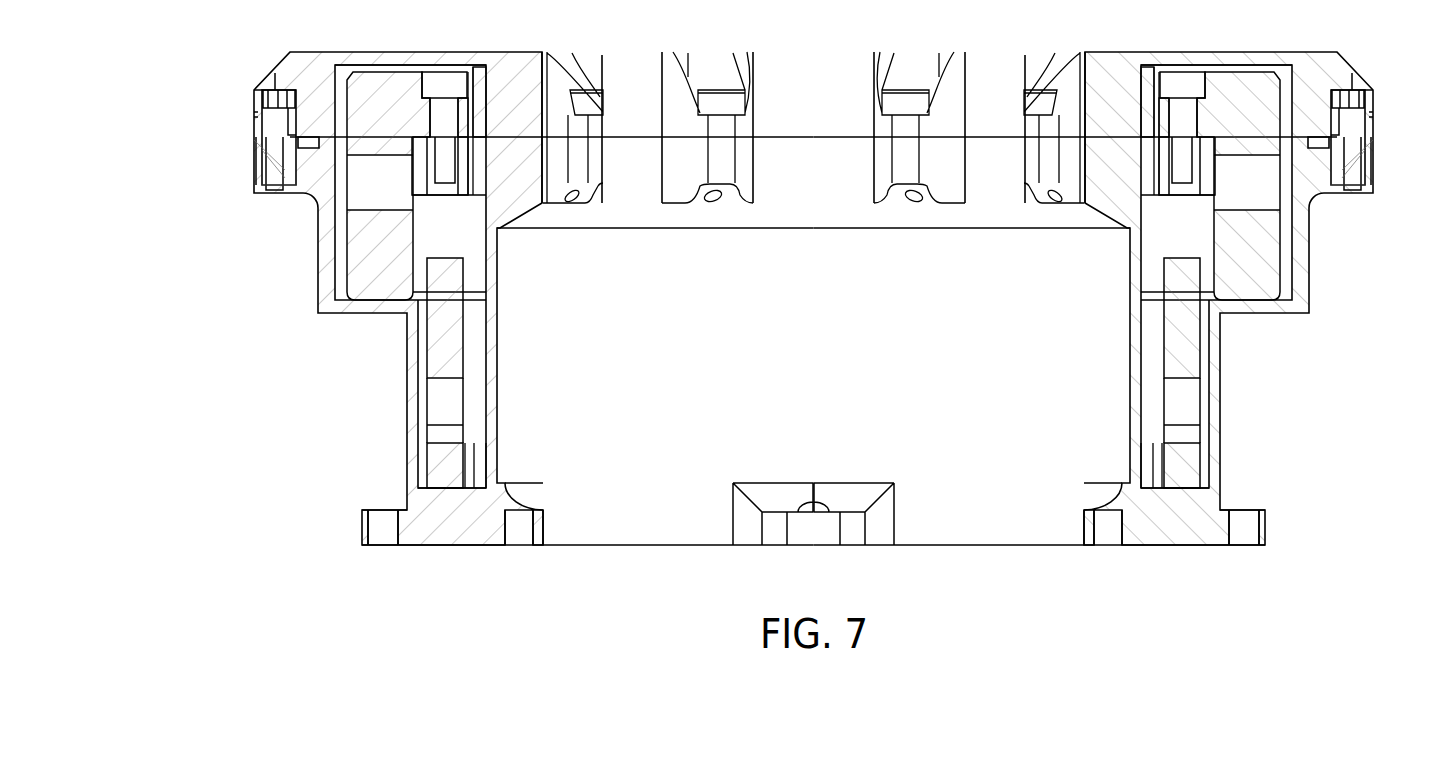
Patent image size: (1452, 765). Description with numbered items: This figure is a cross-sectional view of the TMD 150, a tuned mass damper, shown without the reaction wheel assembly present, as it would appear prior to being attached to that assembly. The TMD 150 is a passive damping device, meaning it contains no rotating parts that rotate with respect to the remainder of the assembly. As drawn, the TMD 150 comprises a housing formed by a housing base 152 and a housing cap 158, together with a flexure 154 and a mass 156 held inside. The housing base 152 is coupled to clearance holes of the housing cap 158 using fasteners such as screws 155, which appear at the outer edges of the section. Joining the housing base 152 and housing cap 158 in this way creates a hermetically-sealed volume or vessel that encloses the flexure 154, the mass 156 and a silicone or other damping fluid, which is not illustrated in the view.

The TMD 150 is at (190, 551).
The housing base 152 is at (1167, 535).
The flexure 154 is at (1170, 335).
The screws 155 is at (1355, 124).
The mass 156 is at (1237, 80).
The housing cap 158 is at (1107, 80).